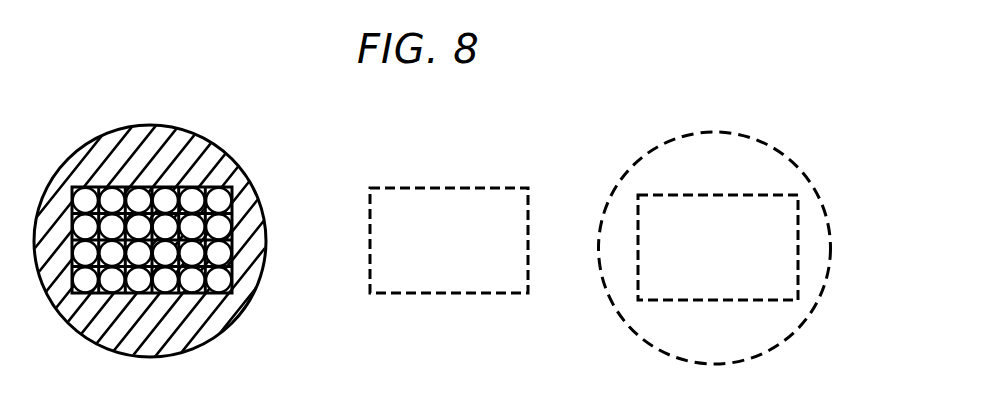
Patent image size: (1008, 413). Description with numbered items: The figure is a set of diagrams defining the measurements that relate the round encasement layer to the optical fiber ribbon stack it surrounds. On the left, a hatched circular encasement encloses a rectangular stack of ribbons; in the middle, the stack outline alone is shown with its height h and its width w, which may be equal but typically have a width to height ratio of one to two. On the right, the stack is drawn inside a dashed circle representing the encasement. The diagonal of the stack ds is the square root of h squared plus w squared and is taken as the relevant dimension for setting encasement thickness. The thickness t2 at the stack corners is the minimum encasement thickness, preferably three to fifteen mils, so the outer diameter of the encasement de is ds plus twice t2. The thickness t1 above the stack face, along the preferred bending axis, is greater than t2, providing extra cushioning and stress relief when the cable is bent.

The height of the optical fiber ribbon stack h is at (343, 193).
The width of the optical fiber ribbon stack w is at (371, 318).
The outer diameter of the encasement layer de is at (599, 244).
The diagonal of the optical fiber ribbon stack ds is at (639, 299).
The encasement thickness on the preferred bending axis t1 is at (714, 134).
The minimum encasement thickness at the stack corners t2 is at (806, 186).